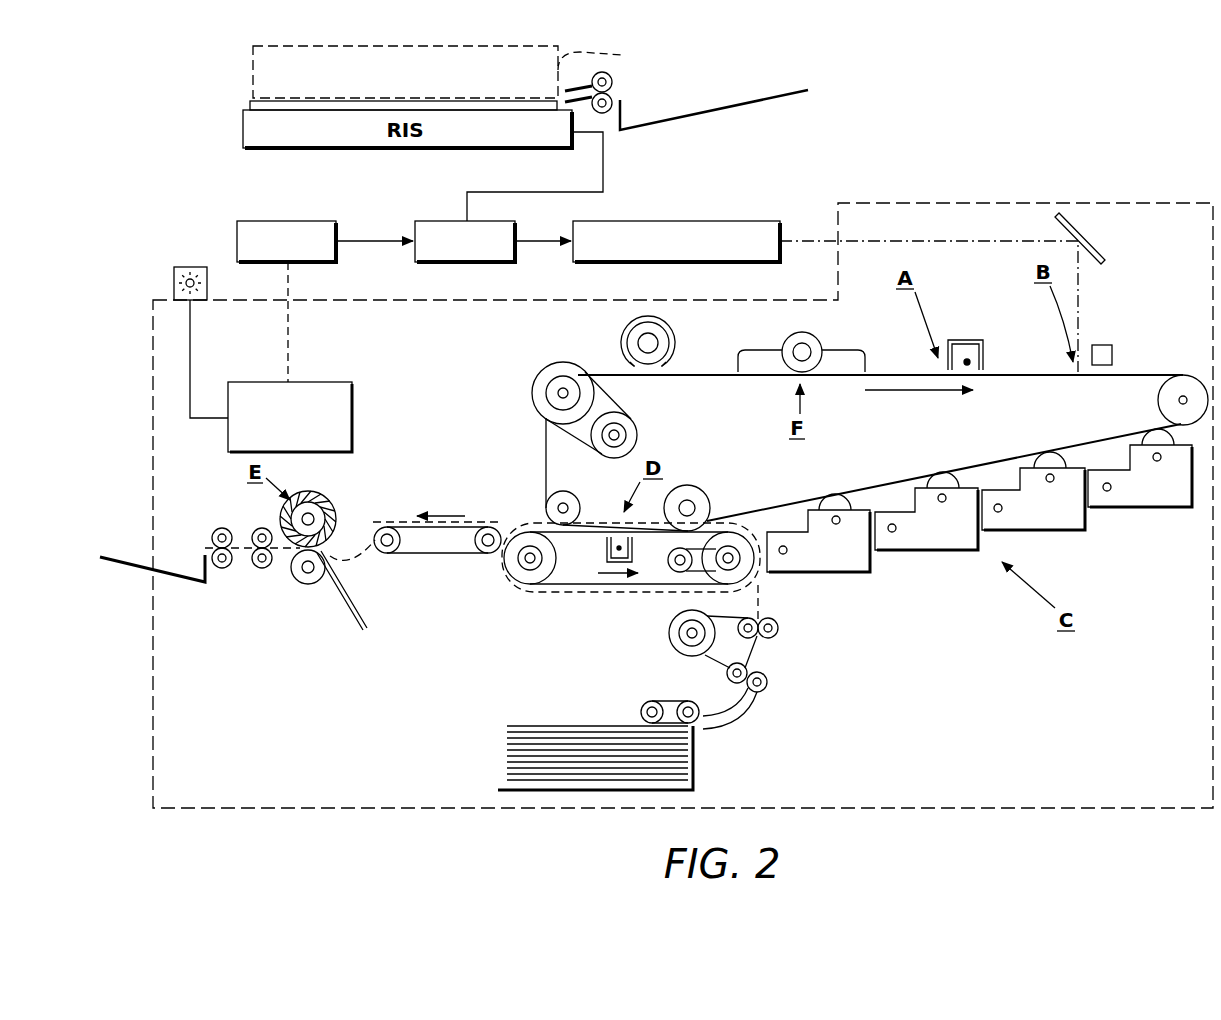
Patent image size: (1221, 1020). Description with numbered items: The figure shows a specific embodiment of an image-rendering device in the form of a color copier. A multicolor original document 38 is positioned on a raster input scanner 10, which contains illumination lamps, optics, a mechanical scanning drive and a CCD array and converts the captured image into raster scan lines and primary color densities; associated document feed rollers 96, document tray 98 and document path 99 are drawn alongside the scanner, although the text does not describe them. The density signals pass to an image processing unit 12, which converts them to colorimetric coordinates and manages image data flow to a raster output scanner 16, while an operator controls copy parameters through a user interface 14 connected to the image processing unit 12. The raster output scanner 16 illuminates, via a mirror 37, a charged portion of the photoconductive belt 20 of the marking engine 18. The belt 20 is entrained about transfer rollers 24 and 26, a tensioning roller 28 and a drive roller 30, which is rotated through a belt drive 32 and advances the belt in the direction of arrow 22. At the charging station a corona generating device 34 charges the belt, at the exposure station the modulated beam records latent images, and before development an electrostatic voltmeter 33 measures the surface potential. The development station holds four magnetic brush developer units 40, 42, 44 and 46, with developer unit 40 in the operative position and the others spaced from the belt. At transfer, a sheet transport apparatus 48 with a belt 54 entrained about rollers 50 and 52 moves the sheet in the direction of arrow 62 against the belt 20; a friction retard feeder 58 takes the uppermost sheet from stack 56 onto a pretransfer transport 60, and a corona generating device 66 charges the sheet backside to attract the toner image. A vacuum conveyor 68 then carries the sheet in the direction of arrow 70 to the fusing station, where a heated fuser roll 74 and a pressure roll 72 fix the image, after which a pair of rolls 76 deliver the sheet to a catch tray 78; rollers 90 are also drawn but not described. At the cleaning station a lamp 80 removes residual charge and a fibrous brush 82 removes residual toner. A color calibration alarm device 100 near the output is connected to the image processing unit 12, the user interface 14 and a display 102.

The raster input scanner 10 is at (248, 88).
The image processing unit 12 is at (440, 221).
The user interface 14 is at (283, 221).
The raster output scanner 16 is at (730, 221).
The marking engine 18 is at (1165, 199).
The photoconductive belt 20 is at (1032, 372).
The arrow 22 is at (912, 393).
The transfer roller 24 is at (550, 500).
The transfer roller 26 is at (700, 487).
The tensioning roller 28 is at (1157, 410).
The drive roller 30 is at (565, 378).
The belt drive 32 is at (637, 430).
The electrostatic voltmeter 33 is at (1105, 345).
The corona generating device 34 is at (968, 340).
The mirror 37 is at (1103, 250).
The multicolor original document 38 is at (357, 105).
The developer unit 40 is at (1152, 500).
The developer unit 42 is at (1055, 520).
The developer unit 44 is at (943, 540).
The developer unit 46 is at (835, 560).
The sheet transport apparatus 48 is at (578, 597).
The roller 50 is at (517, 577).
The roller 52 is at (742, 582).
The belt 54 is at (538, 522).
The stack 56 is at (565, 722).
The friction retard feeder 58 is at (662, 698).
The pretransfer transport 60 is at (770, 652).
The arrow 62 is at (620, 578).
The corona generating device 66 is at (606, 550).
The vacuum conveyor 68 is at (433, 554).
The arrow 70 is at (445, 515).
The pressure roll 72 is at (298, 585).
The heated fuser roll 74 is at (322, 495).
The pair of rolls 76 is at (222, 527).
The catch tray 78 is at (190, 586).
The lamp 80 is at (672, 338).
The fibrous brush 82 is at (822, 337).
The rollers 90 is at (262, 570).
The document feed rollers 96 is at (614, 88).
The document tray 98 is at (745, 108).
The document path 99 is at (604, 58).
The color calibration alarm device 100 is at (352, 400).
The display 102 is at (190, 266).